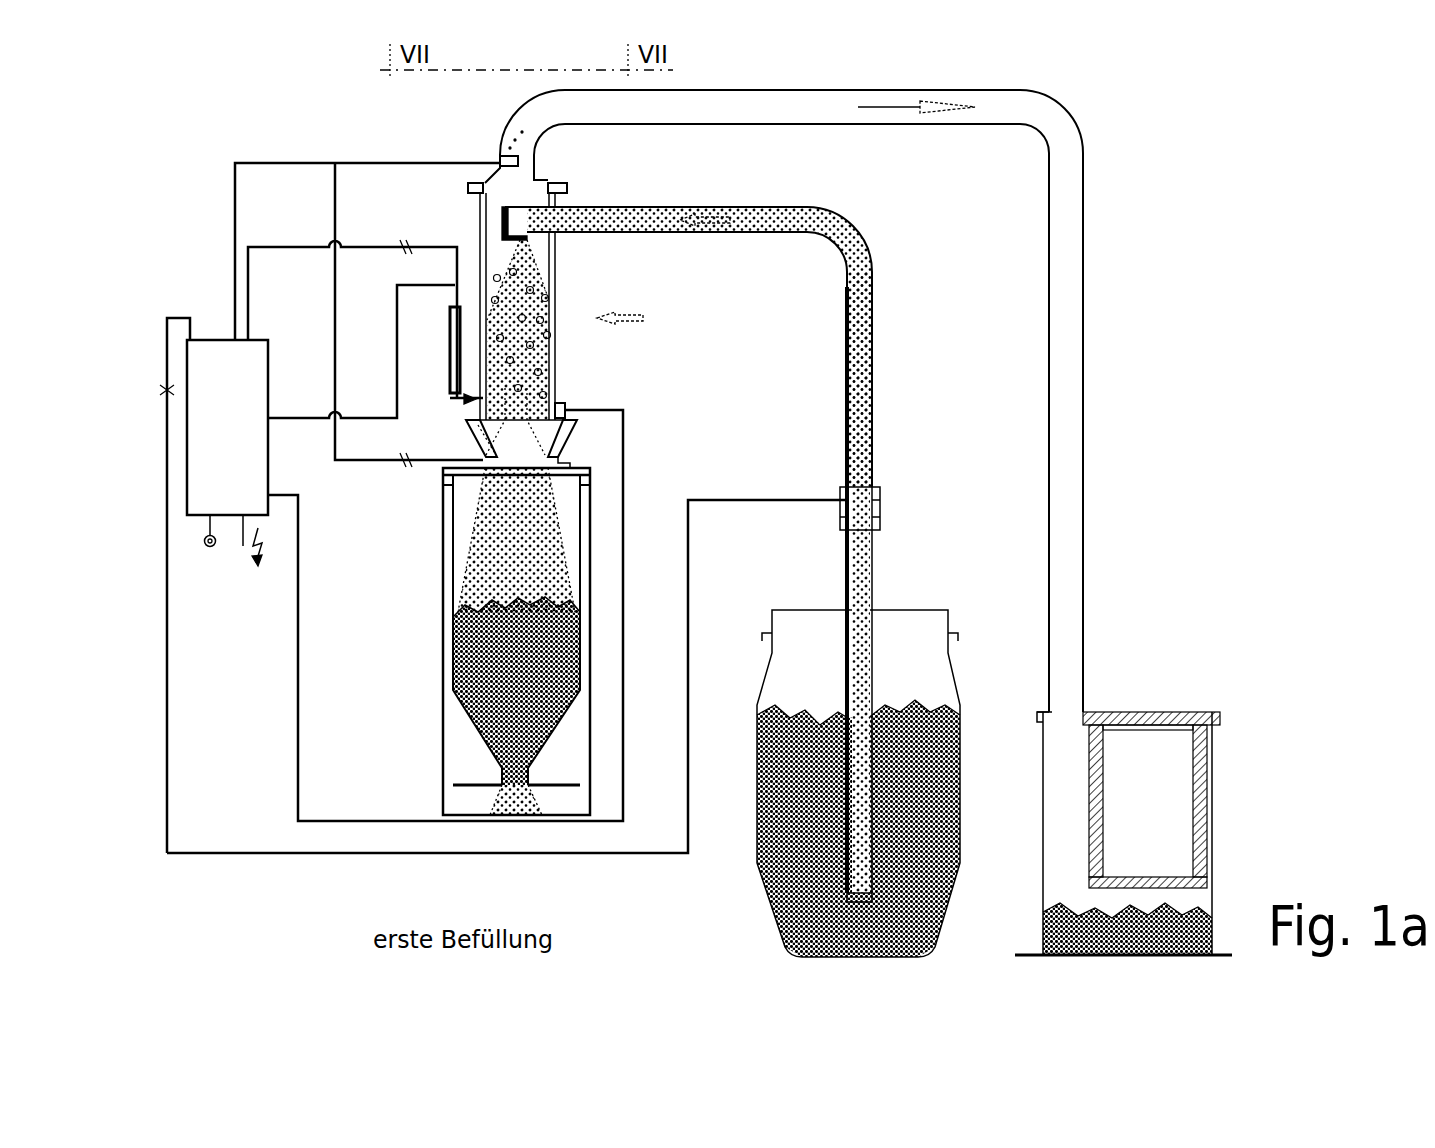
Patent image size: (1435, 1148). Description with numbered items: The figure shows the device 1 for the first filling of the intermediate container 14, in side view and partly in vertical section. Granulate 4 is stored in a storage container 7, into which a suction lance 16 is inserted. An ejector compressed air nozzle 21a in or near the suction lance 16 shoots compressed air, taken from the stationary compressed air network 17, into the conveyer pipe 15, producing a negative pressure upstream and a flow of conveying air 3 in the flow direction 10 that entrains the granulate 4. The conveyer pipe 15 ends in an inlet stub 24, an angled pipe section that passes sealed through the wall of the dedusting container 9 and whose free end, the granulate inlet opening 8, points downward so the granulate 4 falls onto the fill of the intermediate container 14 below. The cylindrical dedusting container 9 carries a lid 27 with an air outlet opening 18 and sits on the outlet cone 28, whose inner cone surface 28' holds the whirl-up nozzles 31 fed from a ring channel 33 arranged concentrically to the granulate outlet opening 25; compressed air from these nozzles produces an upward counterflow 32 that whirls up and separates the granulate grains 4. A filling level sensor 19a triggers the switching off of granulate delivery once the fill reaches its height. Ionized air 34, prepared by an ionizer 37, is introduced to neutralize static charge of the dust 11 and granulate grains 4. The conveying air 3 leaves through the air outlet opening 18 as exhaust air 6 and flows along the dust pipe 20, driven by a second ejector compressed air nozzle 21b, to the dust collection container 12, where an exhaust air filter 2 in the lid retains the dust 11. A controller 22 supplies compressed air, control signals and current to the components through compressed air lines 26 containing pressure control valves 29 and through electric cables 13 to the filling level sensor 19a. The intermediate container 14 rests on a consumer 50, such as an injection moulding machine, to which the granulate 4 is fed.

The filling system 1 is at (215, 142).
The exhaust air filter 2 is at (1207, 832).
The conveying air 3 is at (752, 222).
The granulate 4 is at (518, 264).
The exhaust air 6 is at (897, 108).
The storage container 7 is at (952, 690).
The granulate inlet opening 8 is at (527, 238).
The dedusting container 9 is at (633, 321).
The flow direction 10 is at (705, 220).
The dust 11 is at (1127, 929).
The dust collection container 12 is at (1210, 780).
The electric cables 13 is at (288, 493).
The intermediate container 14 is at (395, 668).
The conveyer pipe 15 is at (742, 206).
The suction lance 16 is at (874, 577).
The compressed air network 17 is at (204, 540).
The air outlet opening 18 is at (520, 188).
The filling level sensor 19a is at (566, 406).
The dust pipe 20 is at (686, 125).
The ejector compressed air nozzle 21a is at (880, 505).
The ejector compressed air nozzle 21b is at (513, 156).
The controller 22 is at (227, 427).
The inlet stub 24 is at (503, 222).
The granulate outlet opening 25 is at (513, 468).
The compressed air lines 26 is at (383, 163).
The lid 27 is at (568, 186).
The outlet cone 28 is at (573, 428).
The inner cone surface 28' is at (616, 446).
The pressure control valve 29 is at (403, 244).
The whirl-up nozzles 31 is at (474, 444).
The counterflow 32 is at (525, 420).
The ring channel 33 is at (542, 468).
The ionized air 34 is at (535, 320).
The ionizer 37 is at (450, 349).
The consumer 50 is at (462, 803).